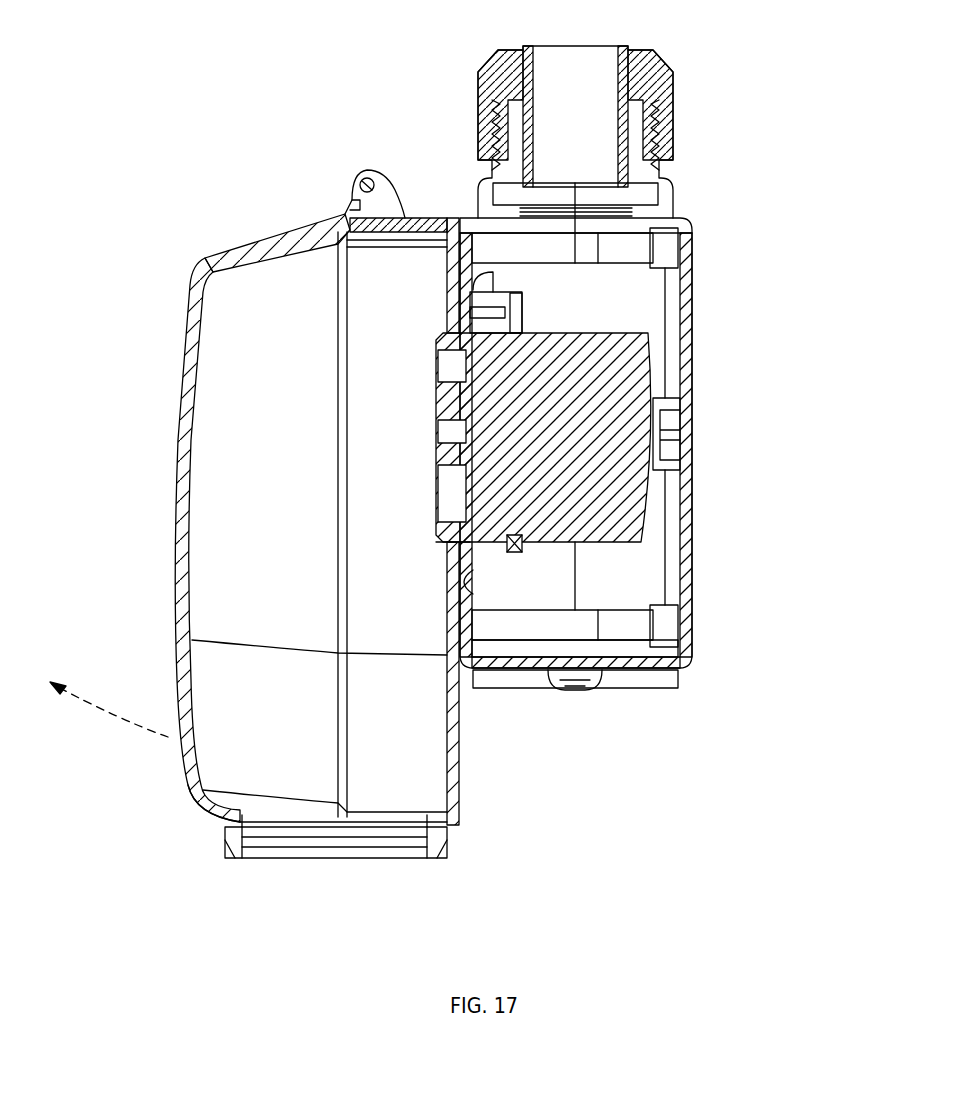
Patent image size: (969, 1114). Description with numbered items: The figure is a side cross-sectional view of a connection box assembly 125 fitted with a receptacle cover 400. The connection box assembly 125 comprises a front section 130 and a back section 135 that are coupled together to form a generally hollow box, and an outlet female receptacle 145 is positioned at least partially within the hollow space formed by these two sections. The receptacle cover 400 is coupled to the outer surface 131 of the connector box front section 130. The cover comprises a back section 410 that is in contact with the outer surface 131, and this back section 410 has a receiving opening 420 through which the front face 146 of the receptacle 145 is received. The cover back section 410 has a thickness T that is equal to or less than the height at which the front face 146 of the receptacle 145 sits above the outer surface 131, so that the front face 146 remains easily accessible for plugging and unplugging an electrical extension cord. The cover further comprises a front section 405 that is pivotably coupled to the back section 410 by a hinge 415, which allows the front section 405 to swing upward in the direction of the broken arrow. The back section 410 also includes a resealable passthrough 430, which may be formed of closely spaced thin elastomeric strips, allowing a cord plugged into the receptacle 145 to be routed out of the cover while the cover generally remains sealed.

The connection box assembly 125 is at (777, 128).
The front section 130 is at (466, 215).
The outer surface 131 is at (473, 589).
The back section 135 is at (693, 327).
The outlet female receptacle 145 is at (572, 343).
The front face 146 is at (437, 400).
The receptacle cover 400 is at (120, 776).
The front section 405 is at (212, 817).
The back section 410 is at (459, 795).
The hinge 415 is at (362, 182).
The receiving opening 420 is at (437, 543).
The resealable passthrough 430 is at (325, 858).
The thickness T is at (410, 732).